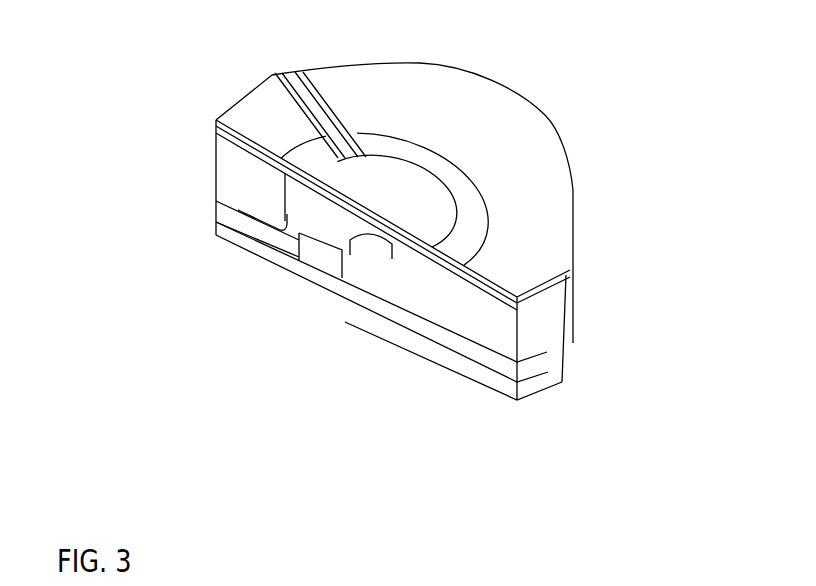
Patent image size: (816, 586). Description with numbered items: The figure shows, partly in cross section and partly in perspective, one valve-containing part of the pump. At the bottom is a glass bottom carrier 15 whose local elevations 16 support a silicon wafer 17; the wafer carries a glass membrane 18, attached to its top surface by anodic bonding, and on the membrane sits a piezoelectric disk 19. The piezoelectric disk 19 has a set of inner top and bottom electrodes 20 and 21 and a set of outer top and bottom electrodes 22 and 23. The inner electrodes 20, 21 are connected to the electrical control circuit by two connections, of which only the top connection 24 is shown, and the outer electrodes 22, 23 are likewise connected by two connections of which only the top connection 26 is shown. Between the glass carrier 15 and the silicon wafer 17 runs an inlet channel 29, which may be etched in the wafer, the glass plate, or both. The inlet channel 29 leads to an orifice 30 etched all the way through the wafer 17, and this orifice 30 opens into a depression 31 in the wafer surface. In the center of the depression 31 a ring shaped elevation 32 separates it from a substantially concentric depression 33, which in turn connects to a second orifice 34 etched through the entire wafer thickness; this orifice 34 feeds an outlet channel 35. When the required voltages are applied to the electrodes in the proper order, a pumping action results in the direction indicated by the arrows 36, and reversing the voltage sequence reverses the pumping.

The top connection 26 is at (272, 75).
The top connection 24 is at (300, 75).
The inner top electrode 20 is at (386, 197).
The inner bottom electrode 21 is at (402, 233).
The outer top electrode 22 is at (450, 247).
The outer bottom electrode 23 is at (463, 260).
The piezoelectric disk 19 is at (503, 283).
The glass membrane 18 is at (520, 305).
The silicon wafer 17 is at (545, 338).
The outlet channel 35 is at (523, 373).
The depression 31 is at (283, 186).
The inlet channel 29 is at (213, 202).
The arrows 36 is at (242, 221).
The glass bottom carrier 15 is at (243, 232).
The orifice 30 is at (288, 235).
The local elevations 16 is at (315, 259).
The orifice 34 is at (365, 256).
The depression 33 is at (383, 245).
The ring shaped elevation 32 is at (413, 259).